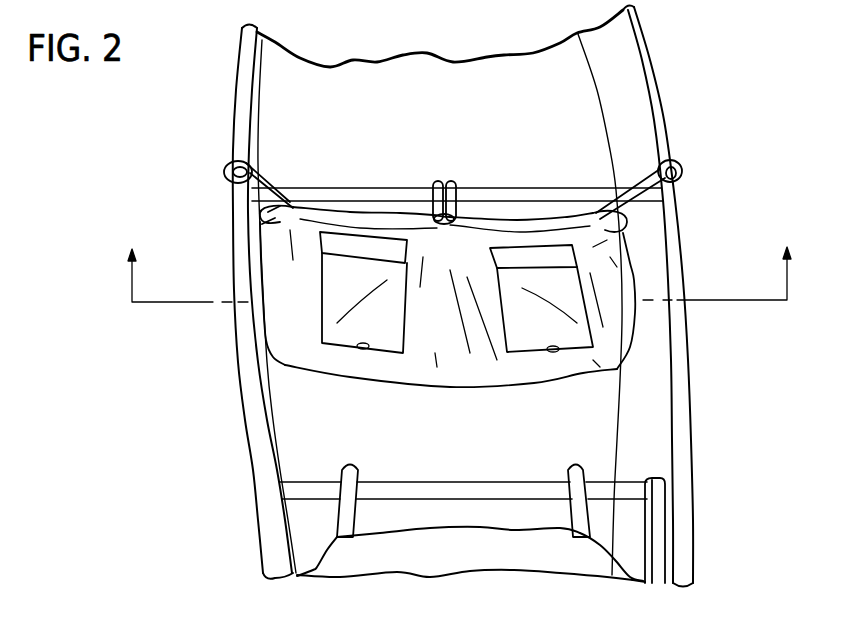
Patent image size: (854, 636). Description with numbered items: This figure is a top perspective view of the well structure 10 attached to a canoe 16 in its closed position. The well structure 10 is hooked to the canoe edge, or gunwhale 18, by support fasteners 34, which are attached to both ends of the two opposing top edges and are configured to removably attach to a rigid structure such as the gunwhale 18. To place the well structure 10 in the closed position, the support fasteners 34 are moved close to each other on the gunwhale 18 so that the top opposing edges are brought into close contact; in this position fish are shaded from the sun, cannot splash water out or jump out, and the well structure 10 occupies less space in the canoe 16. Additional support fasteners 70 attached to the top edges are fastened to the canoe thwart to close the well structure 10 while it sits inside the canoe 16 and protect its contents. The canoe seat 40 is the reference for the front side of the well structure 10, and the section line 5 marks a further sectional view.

The well structure 10 is at (436, 404).
The canoe 16 is at (278, 483).
The canoe gunwhale 18 is at (238, 370).
The support fasteners 34 is at (222, 164).
The canoe seat 40 is at (484, 557).
The additional support fasteners 70 is at (450, 181).
The section line 5- 5 is at (458, 262).